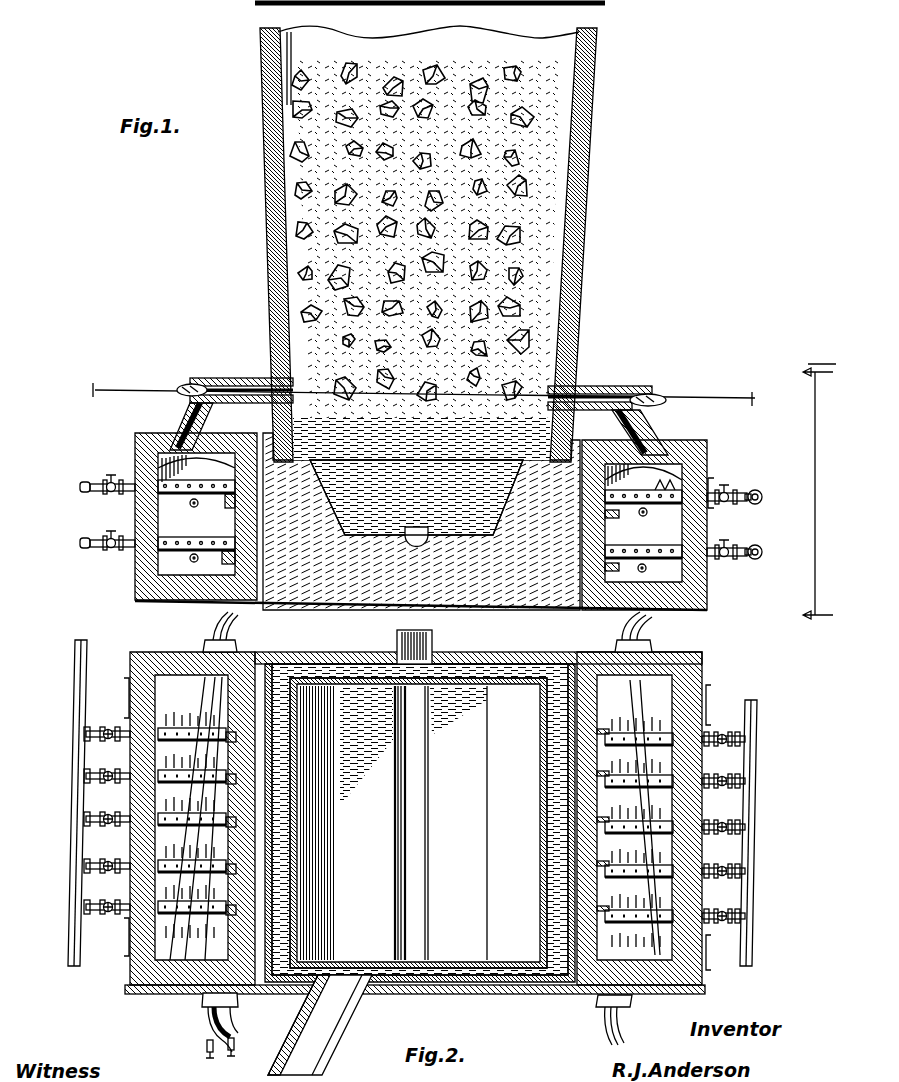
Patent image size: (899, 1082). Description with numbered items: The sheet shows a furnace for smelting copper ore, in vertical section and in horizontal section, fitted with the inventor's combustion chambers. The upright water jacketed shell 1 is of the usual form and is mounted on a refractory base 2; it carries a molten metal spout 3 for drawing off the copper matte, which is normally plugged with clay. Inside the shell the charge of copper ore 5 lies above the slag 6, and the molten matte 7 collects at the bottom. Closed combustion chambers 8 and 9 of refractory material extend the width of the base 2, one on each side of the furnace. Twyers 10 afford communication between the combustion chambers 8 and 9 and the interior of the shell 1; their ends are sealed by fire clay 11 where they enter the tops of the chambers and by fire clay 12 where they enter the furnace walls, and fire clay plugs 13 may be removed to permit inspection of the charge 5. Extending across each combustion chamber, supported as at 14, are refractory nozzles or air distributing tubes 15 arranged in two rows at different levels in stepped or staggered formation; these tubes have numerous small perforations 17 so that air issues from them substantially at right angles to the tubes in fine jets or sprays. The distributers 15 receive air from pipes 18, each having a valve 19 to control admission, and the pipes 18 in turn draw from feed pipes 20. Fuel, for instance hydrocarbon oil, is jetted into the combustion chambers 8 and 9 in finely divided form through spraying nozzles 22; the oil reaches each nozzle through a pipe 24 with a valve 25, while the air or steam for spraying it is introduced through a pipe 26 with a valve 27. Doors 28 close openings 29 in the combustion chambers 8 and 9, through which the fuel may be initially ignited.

In FIG. 1, the water jacketed shell 1 is at (575, 262).
In FIG. 2, the water jacketed shell 1 is at (540, 930).
In FIG. 1, the refractory base 2 is at (556, 603).
In FIG. 2, the refractory base 2 is at (450, 965).
In FIG. 1, the molten metal spout 3 is at (412, 548).
In FIG. 2, the molten metal spout 3 is at (396, 646).
In FIG. 1, the charge of copper ore 5 is at (558, 203).
In FIG. 1, the slag 6 is at (421, 476).
In FIG. 1, the molten matte 7 is at (458, 540).
In FIG. 1, the combustion chamber 8 is at (150, 433).
In FIG. 1, the combustion chamber 9 is at (697, 444).
In FIG. 2, the combustion chamber 9 is at (703, 766).
In FIG. 1, the twyer 10 is at (220, 364).
In FIG. 1, the fire clay 11 is at (181, 434).
In FIG. 1, the fire clay 12 is at (270, 378).
In FIG. 1, the fire clay plug 13 is at (185, 384).
In FIG. 2, the fire clay plug 13 is at (178, 812).
In FIG. 1, the support 14 is at (197, 560).
In FIG. 2, the support 14 is at (580, 778).
In FIG. 1, the air distributing tube 15 is at (205, 494).
In FIG. 1, the perforation 17 is at (668, 496).
In FIG. 1, the air pipe 18 is at (748, 508).
In FIG. 2, the air pipe 18 is at (103, 774).
In FIG. 1, the valve 19 is at (727, 493).
In FIG. 2, the valve 19 is at (98, 822).
In FIG. 1, the feed pipe 20 is at (762, 497).
In FIG. 2, the feed pipe 20 is at (755, 850).
In FIG. 1, the spraying nozzle 22 is at (177, 603).
In FIG. 2, the spraying nozzle 22 is at (207, 647).
In FIG. 2, the fuel pipe 24 is at (233, 1020).
In FIG. 2, the valve 25 is at (234, 1044).
In FIG. 2, the air or steam pipe 26 is at (212, 1025).
In FIG. 2, the valve 27 is at (206, 1044).
In FIG. 1, the door 28 is at (714, 482).
In FIG. 2, the door 28 is at (122, 692).
In FIG. 2, the opening 29 is at (140, 990).